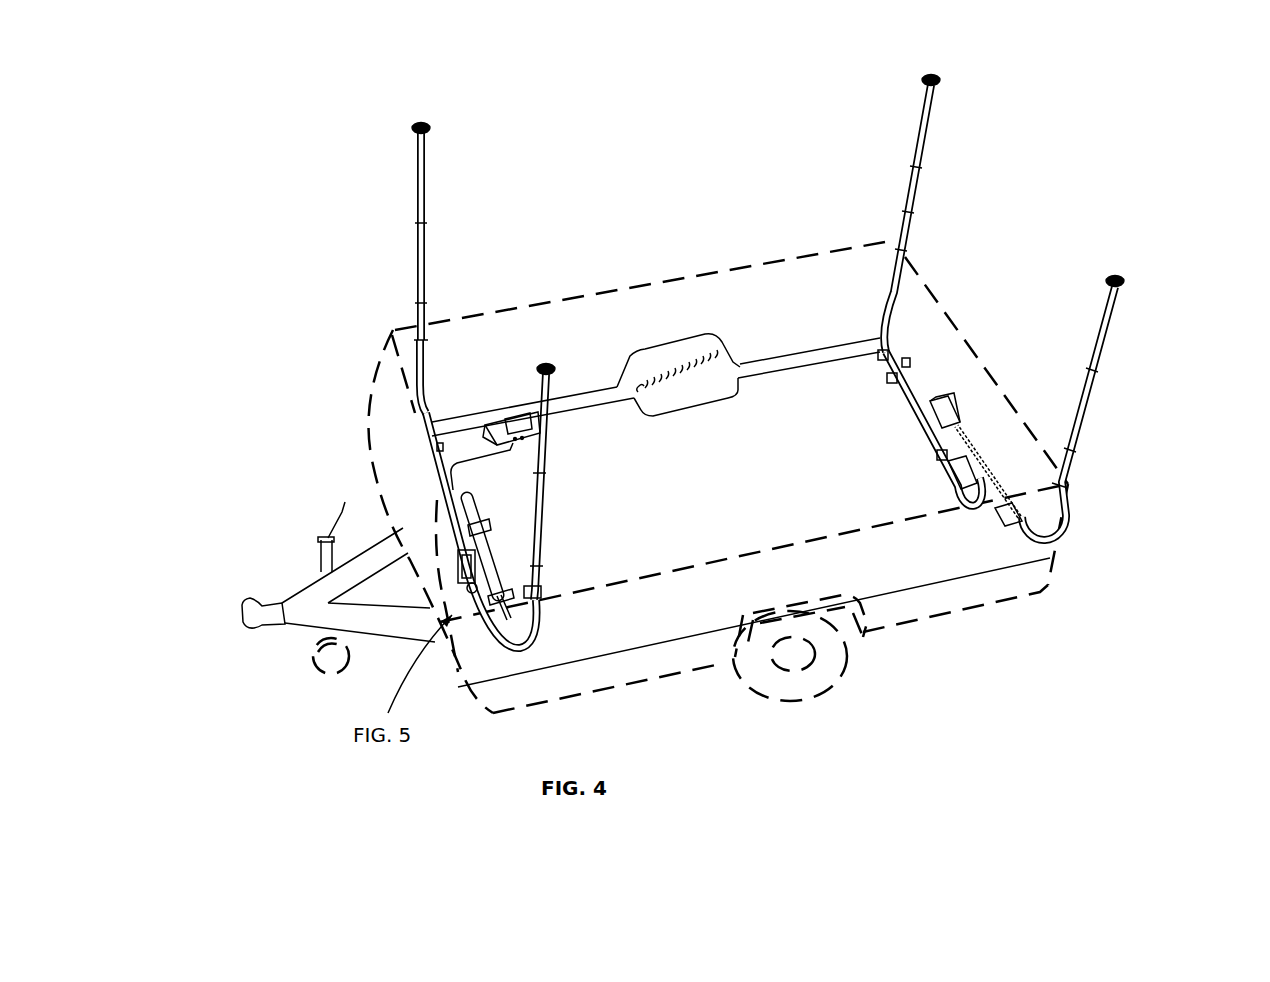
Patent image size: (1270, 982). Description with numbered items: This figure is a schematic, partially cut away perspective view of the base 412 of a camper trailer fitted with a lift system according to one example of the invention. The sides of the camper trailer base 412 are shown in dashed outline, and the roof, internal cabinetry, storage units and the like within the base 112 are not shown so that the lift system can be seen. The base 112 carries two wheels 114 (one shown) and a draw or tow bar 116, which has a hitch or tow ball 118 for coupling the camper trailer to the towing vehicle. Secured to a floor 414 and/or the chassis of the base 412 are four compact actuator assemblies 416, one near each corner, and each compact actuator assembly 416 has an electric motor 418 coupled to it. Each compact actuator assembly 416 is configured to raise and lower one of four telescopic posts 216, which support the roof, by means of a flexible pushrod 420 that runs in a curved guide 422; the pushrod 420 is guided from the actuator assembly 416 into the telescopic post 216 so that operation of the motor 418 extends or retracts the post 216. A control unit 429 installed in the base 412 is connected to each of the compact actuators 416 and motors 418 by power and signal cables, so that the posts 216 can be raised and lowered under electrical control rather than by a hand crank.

The base trailer 112 is at (832, 649).
The wheels 114 is at (802, 697).
The tow bar 116 is at (302, 632).
The tow ball 118 is at (240, 625).
The telescopic post 216 is at (411, 257).
The base 412 is at (960, 593).
The floor 414 is at (782, 455).
The compact actuator assembly 416 is at (433, 479).
The electric motor 418 is at (531, 513).
The flexible pushrod 420 is at (431, 416).
The curved guide 422 is at (880, 356).
The controller 429 is at (510, 408).